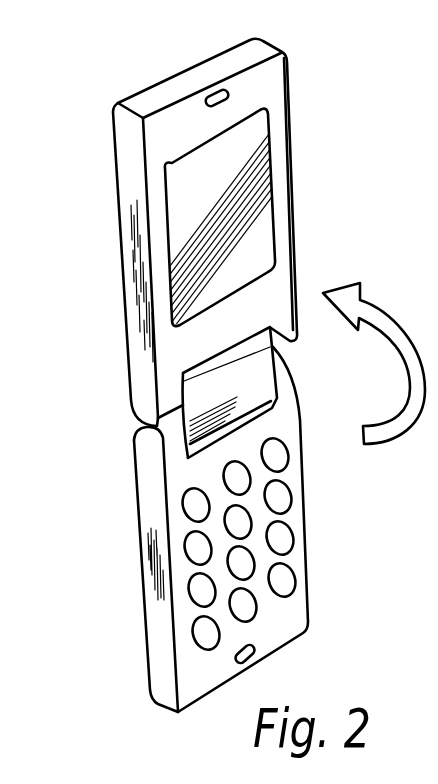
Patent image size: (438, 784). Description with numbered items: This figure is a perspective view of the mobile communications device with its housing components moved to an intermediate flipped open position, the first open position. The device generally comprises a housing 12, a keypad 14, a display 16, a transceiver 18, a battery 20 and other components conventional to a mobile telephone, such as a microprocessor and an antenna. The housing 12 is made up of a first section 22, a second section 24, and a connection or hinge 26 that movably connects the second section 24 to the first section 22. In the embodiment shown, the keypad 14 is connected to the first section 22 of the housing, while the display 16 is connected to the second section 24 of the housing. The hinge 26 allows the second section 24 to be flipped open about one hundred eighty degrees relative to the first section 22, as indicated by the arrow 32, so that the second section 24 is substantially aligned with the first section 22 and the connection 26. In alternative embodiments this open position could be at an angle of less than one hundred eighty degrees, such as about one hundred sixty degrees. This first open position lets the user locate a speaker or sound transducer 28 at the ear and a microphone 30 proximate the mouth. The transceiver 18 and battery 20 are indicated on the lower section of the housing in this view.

The housing 12 is at (296, 90).
The keypad 14 is at (283, 537).
The display 16 is at (222, 176).
The transceiver 18 is at (152, 535).
The battery 20 is at (158, 622).
The first section 22 is at (302, 495).
The second section 24 is at (144, 270).
The hinge 26 is at (252, 385).
The speaker 28 is at (218, 96).
The microphone 30 is at (253, 658).
The arrow 32 is at (404, 338).